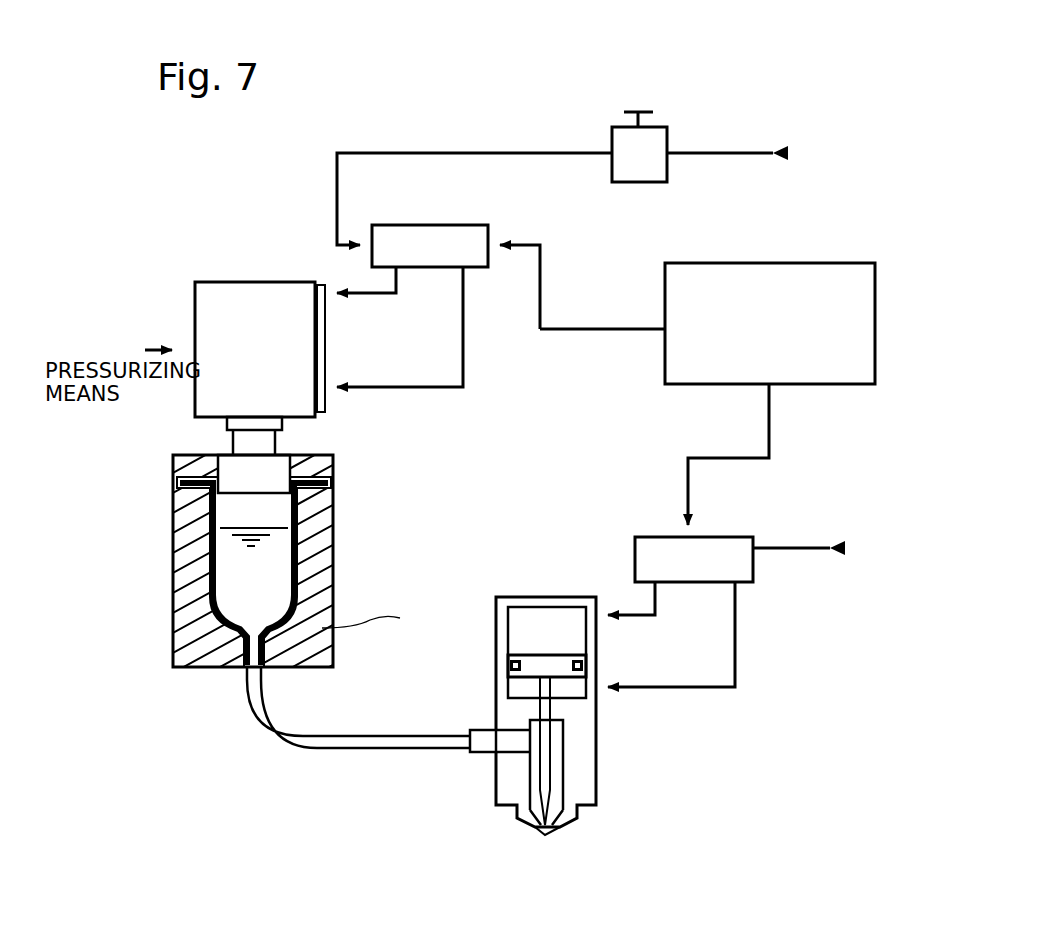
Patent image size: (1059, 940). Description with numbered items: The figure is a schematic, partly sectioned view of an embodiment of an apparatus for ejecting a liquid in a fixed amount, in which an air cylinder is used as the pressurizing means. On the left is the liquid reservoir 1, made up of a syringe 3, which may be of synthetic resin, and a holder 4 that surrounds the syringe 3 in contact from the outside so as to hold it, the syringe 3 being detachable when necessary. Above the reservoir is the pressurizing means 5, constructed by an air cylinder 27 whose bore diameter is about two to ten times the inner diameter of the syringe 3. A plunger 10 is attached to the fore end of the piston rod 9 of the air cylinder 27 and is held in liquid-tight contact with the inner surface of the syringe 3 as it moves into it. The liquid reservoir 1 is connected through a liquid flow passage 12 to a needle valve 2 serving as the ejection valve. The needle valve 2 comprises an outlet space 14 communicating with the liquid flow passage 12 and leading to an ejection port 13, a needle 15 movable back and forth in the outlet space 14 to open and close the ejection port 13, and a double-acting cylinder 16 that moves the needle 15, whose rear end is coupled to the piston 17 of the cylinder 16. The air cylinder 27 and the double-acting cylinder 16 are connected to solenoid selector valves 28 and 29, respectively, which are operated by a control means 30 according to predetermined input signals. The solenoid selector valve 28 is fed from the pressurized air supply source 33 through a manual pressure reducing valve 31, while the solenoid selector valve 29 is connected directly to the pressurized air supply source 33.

The liquid reservoir 1 is at (259, 555).
The needle valve 2 is at (609, 714).
The syringe 3 is at (317, 577).
The holder 4 is at (158, 537).
The pressurizing means 5 is at (182, 295).
The piston rod 9 is at (263, 445).
The plunger 10 is at (273, 508).
The liquid flow passage 12 is at (353, 745).
The ejection port 13 is at (545, 828).
The outlet space 14 is at (570, 772).
The needle 15 is at (548, 790).
The double-acting cylinder 16 is at (598, 653).
The piston 17 is at (542, 665).
The air cylinder 27 is at (218, 398).
The solenoid selector valve 28 is at (473, 262).
The solenoid selector valve 29 is at (658, 547).
The control means 30 is at (833, 372).
The manual pressure reducing valve 31 is at (615, 167).
The pressurized air supply source 33 is at (783, 148).